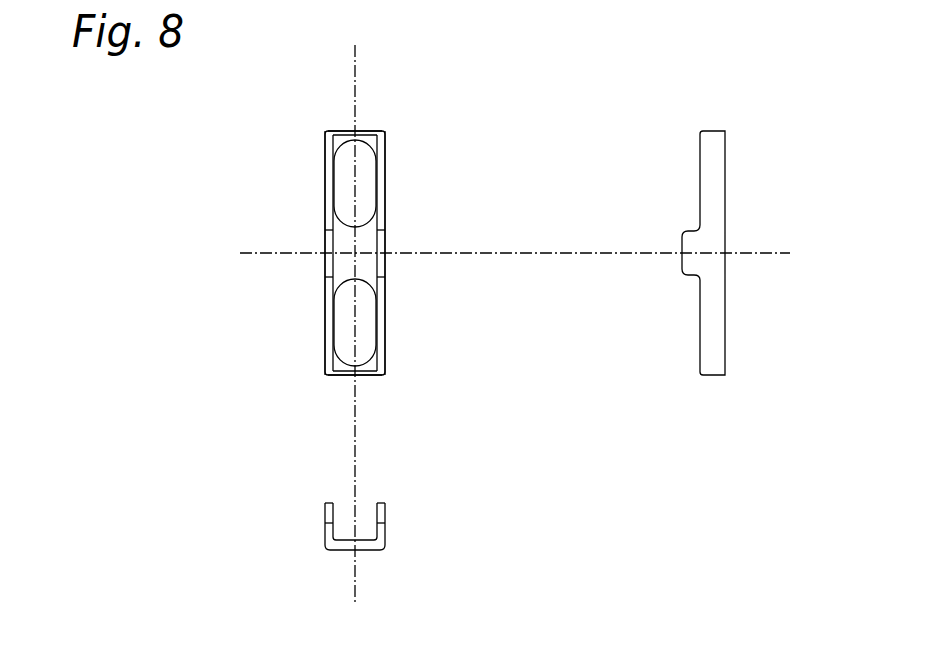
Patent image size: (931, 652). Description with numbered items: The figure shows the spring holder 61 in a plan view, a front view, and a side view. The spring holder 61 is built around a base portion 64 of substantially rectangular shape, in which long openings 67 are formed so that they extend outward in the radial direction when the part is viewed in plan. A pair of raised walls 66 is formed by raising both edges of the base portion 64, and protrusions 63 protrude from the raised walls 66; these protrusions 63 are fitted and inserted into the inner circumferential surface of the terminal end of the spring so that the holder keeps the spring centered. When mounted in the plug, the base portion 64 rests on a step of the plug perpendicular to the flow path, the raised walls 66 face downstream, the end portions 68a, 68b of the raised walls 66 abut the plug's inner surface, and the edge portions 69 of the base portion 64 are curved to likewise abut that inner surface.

The spring holder 61 is at (386, 178).
The protrusion 63 is at (325, 250).
The base portion 64 is at (345, 272).
The raised wall 66 is at (326, 301).
The long opening 67 is at (360, 138).
The end portion 68a is at (325, 131).
The end portion 68b is at (386, 131).
The edge portion 69 is at (348, 131).